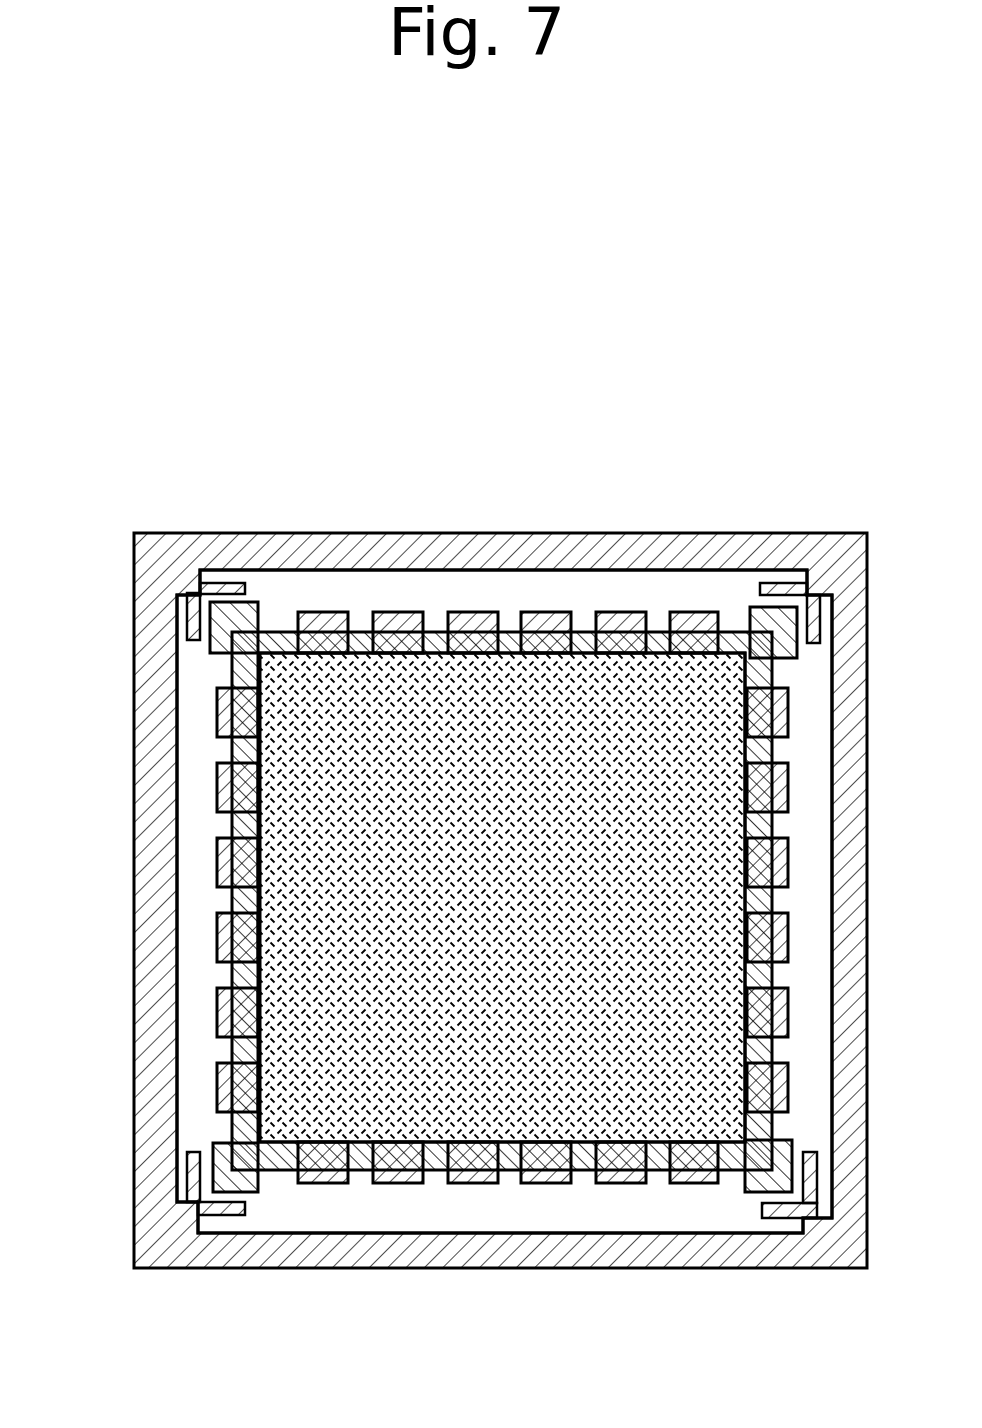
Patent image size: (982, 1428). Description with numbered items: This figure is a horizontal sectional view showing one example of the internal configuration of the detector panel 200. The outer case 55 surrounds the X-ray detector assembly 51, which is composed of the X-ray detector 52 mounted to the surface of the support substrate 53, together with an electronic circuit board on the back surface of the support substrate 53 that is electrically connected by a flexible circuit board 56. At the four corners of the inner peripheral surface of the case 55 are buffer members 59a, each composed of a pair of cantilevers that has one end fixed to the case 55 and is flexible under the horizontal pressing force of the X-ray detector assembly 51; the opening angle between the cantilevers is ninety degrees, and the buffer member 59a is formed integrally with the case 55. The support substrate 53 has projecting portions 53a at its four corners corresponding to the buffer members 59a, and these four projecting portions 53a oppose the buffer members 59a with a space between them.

The detector panel 200 is at (489, 273).
The X-ray detector assembly 51 is at (327, 590).
The X-ray detector 52 is at (470, 695).
The support substrate 53 is at (235, 902).
The projecting portion 53a is at (220, 1143).
The case 55 is at (483, 1245).
The flexible circuit board 56 is at (220, 938).
The buffer member 59a is at (188, 1178).